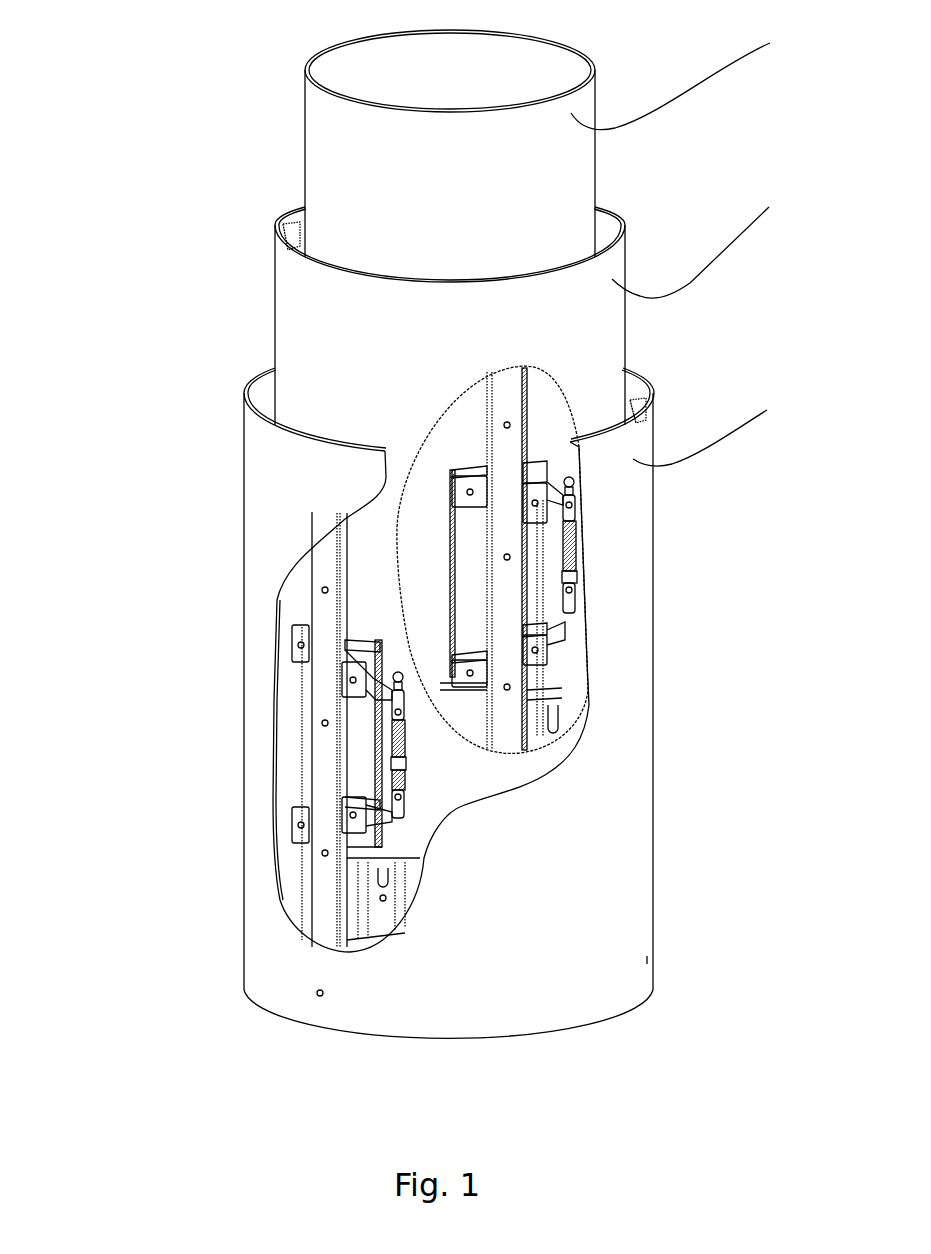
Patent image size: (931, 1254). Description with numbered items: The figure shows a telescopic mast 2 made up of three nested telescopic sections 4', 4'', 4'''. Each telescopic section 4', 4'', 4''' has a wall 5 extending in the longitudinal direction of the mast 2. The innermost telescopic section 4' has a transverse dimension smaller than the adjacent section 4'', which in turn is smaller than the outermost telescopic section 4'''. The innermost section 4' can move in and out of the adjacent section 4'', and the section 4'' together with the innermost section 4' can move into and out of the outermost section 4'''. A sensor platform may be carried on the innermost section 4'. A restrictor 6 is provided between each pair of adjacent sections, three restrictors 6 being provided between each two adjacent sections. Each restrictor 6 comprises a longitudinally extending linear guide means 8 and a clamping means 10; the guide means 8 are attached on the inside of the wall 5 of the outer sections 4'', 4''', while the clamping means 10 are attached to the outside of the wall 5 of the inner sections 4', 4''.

The telescopic mast 2 is at (423, 529).
The innermost telescopic section 4' is at (552, 143).
The intermediate telescopic section 4'' is at (540, 480).
The outermost telescopic section 4''' is at (527, 703).
The wall 5 is at (683, 243).
The restrictor 6 is at (604, 621).
The linear guide means 8 is at (330, 772).
The clamping means 10 is at (445, 657).